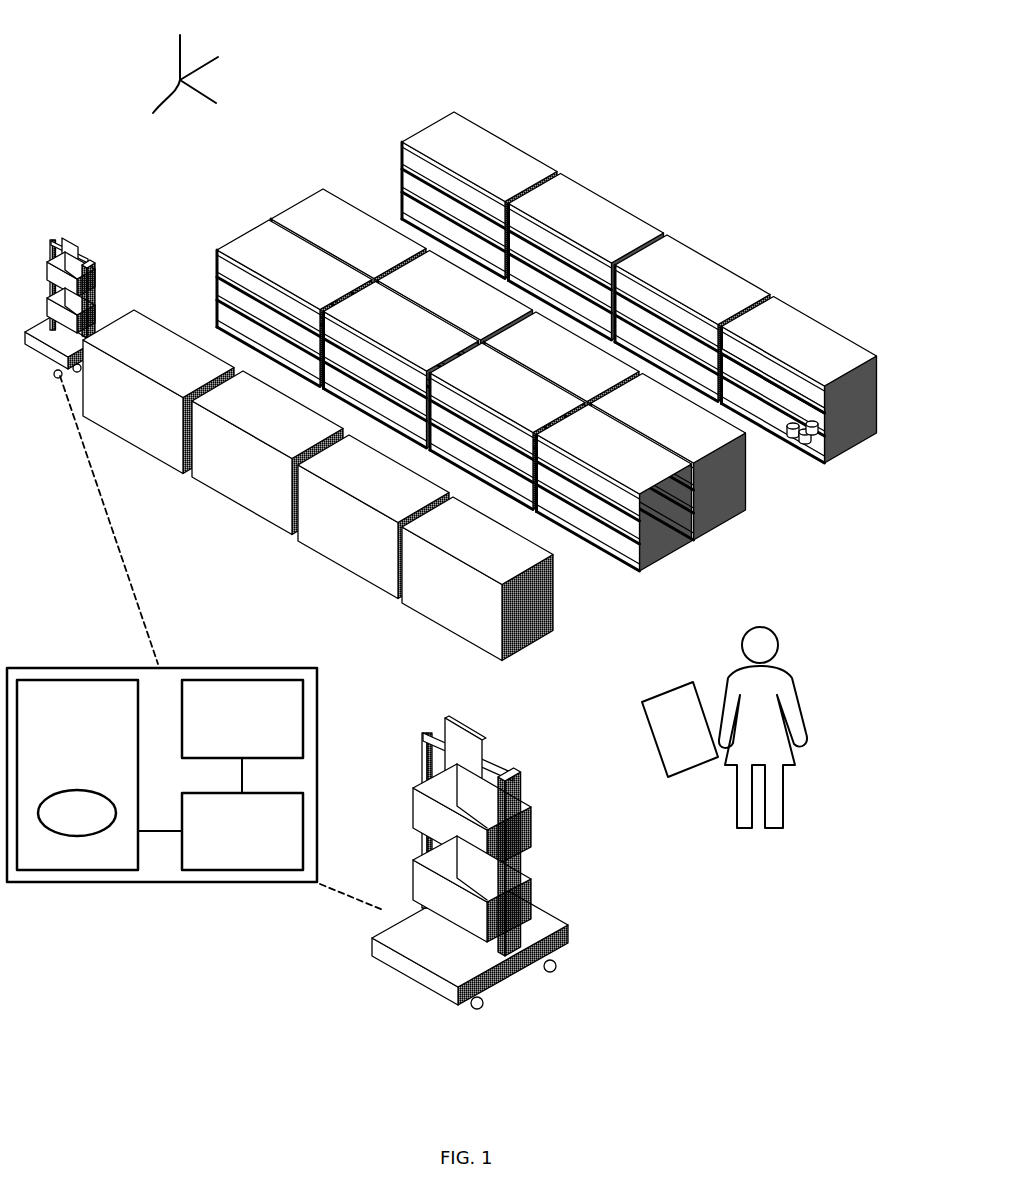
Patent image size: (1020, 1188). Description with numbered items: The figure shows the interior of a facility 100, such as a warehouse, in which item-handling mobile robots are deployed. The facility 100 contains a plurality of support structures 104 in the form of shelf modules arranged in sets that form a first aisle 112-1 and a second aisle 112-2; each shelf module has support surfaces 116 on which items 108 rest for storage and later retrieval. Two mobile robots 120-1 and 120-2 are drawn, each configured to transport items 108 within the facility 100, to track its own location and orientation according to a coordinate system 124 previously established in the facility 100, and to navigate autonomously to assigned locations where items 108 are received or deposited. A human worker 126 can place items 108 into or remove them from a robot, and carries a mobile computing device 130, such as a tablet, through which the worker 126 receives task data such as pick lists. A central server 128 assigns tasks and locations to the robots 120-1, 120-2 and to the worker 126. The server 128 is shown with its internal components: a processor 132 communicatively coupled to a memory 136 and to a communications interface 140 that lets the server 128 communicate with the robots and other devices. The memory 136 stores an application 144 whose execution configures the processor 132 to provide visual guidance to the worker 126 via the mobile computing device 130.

The facility 100 is at (662, 270).
The support structures 104 is at (800, 338).
The items 108 is at (827, 435).
The aisle 112-1 is at (565, 578).
The aisle 112-2 is at (758, 462).
The support surfaces 116 is at (798, 385).
The mobile robot 120-1 is at (378, 970).
The mobile robot 120-2 is at (62, 238).
The coordinate system 124 is at (183, 84).
The worker 126 is at (800, 680).
The server 128 is at (216, 770).
The mobile computing device 130 is at (680, 729).
The processor 132 is at (242, 831).
The memory 136 is at (77, 775).
The communications interface 140 is at (242, 719).
The application 144 is at (77, 813).